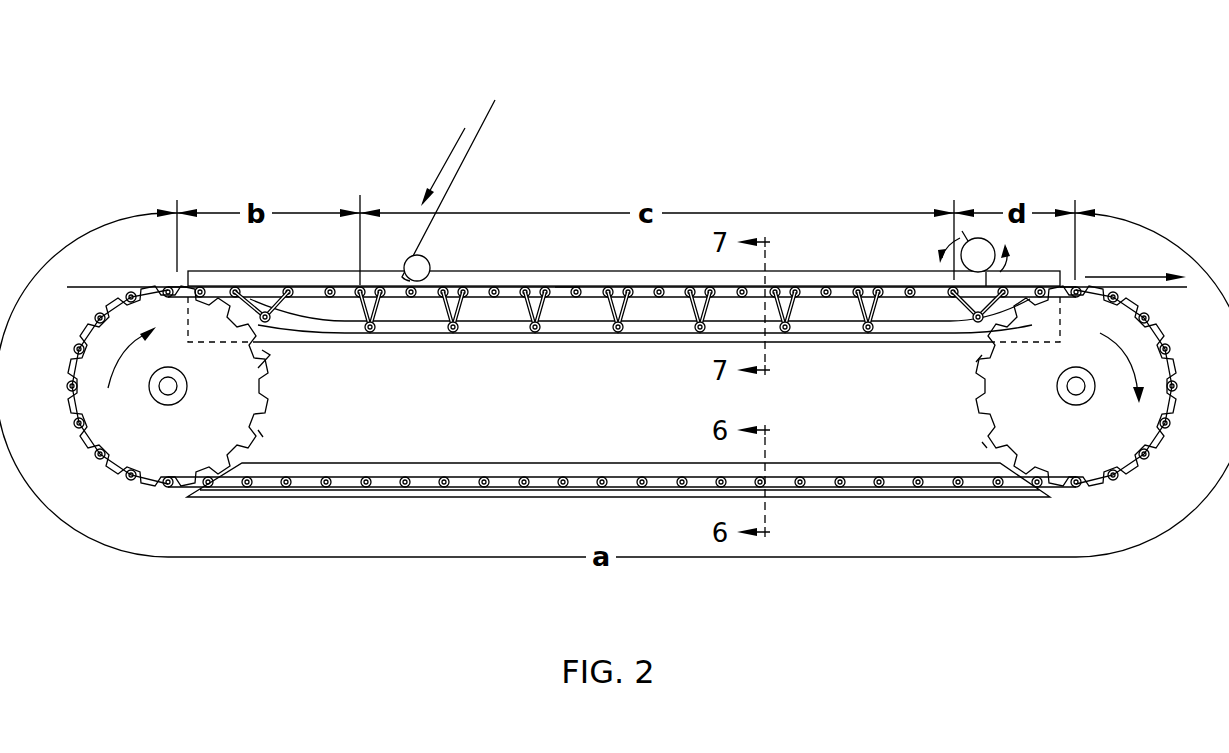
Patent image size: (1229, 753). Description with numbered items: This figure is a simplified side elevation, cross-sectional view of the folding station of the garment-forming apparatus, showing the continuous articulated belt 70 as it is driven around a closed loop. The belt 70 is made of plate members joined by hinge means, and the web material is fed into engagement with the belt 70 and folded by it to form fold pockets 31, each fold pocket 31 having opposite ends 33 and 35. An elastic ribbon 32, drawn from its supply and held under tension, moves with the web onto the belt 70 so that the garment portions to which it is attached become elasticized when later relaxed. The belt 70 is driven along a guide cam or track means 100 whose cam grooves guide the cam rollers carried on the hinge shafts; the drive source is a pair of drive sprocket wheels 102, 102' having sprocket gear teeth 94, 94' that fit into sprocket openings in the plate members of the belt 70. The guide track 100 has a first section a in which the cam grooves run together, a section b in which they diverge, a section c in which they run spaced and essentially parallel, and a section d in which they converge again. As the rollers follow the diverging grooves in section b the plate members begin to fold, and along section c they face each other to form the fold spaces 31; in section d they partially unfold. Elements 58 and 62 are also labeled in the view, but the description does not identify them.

The fold pocket 31 is at (528, 305).
The elastic ribbon 32 is at (483, 113).
The fold pocket end 33 is at (535, 291).
The fold pocket end 35 is at (545, 325).
The guide roller 58 is at (428, 262).
The drive roller 62 is at (981, 248).
The continuous articulated belt 70 is at (565, 295).
The sprocket gear teeth 94 is at (309, 393).
The sprocket gear teeth 94' is at (926, 401).
The guide track 100 is at (288, 502).
The drive sprocket wheel 102 is at (168, 386).
The drive sprocket wheel 102' is at (1076, 386).